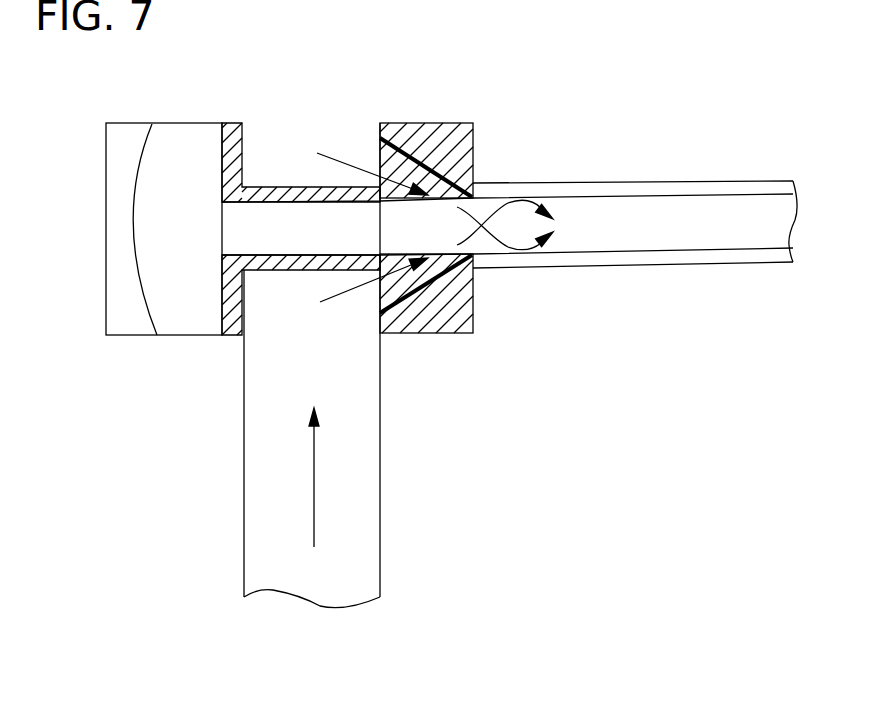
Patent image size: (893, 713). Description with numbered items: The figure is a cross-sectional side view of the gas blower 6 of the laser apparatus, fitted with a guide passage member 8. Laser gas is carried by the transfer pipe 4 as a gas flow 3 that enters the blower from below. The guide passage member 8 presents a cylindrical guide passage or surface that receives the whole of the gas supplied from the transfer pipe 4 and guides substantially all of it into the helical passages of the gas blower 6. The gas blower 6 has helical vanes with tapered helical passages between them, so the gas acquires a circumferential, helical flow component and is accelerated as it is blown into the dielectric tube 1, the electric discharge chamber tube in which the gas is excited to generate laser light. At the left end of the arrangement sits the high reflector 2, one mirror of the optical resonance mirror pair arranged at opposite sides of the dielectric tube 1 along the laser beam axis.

The dielectric tube 1 is at (580, 188).
The high reflector 2 is at (127, 135).
The gas flow 3 is at (314, 478).
The transfer pipe 4 is at (382, 563).
The gas blower 6 is at (433, 128).
The guide passage member 8 is at (232, 130).